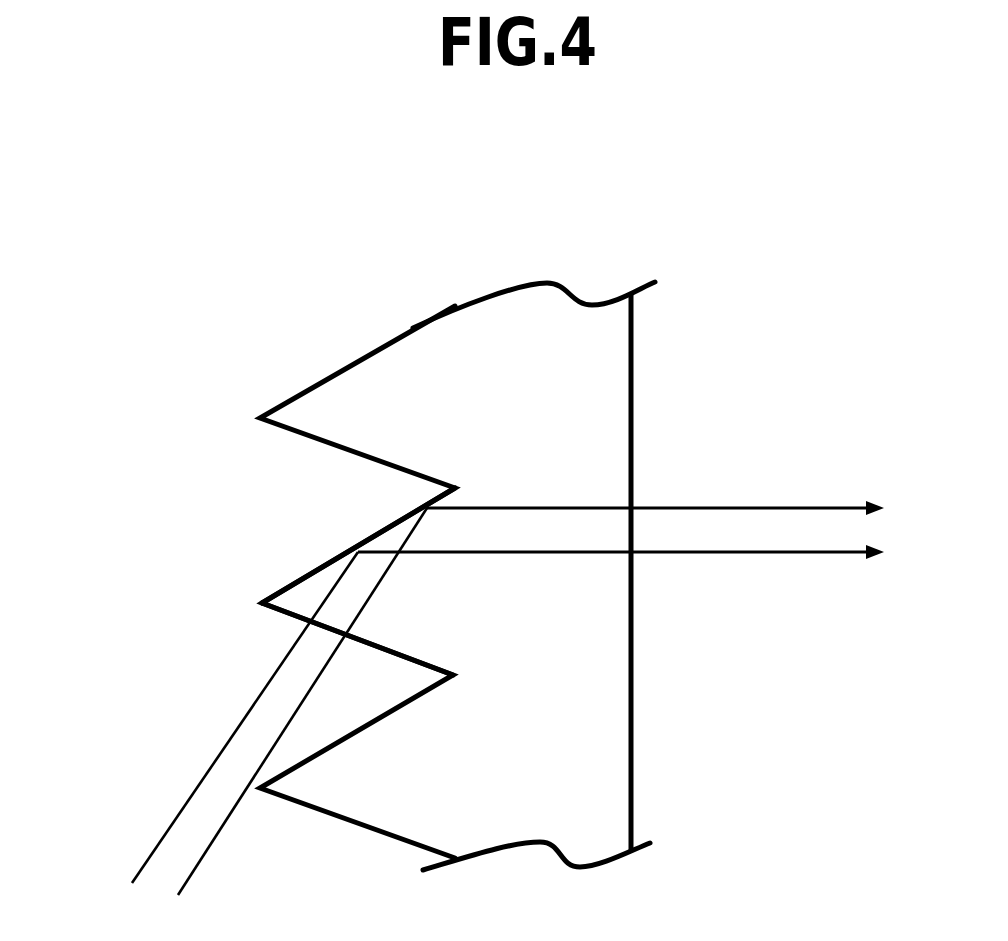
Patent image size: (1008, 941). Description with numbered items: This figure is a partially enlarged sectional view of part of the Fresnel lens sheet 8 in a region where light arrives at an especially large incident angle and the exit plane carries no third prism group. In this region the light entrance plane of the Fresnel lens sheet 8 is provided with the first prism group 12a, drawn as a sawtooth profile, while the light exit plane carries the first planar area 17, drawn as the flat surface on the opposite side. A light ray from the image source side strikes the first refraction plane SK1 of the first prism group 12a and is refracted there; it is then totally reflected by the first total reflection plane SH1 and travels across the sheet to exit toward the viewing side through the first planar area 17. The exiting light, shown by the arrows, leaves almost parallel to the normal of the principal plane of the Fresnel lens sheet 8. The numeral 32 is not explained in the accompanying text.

The Fresnel lens sheet 8 is at (543, 305).
The first planar area 17 is at (631, 394).
The first prism group 12a is at (342, 418).
The first total reflection plane SH1 is at (335, 558).
The first refraction plane SK1 is at (307, 622).
The light ray 32 is at (183, 813).